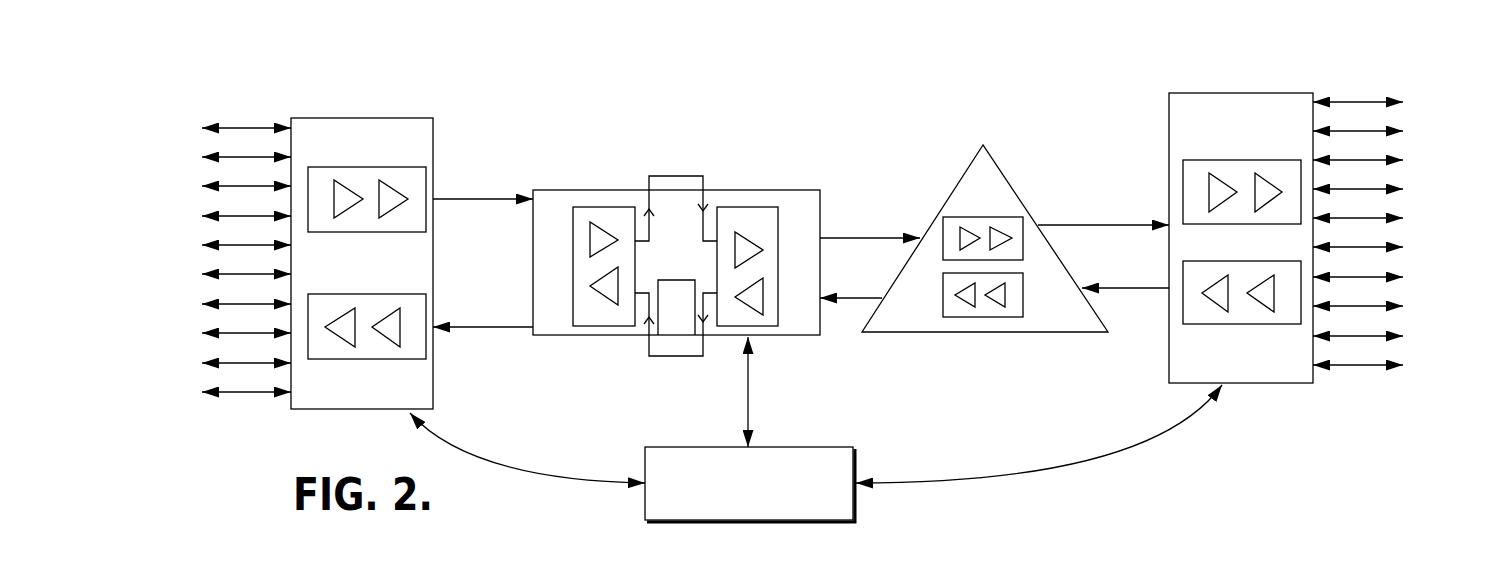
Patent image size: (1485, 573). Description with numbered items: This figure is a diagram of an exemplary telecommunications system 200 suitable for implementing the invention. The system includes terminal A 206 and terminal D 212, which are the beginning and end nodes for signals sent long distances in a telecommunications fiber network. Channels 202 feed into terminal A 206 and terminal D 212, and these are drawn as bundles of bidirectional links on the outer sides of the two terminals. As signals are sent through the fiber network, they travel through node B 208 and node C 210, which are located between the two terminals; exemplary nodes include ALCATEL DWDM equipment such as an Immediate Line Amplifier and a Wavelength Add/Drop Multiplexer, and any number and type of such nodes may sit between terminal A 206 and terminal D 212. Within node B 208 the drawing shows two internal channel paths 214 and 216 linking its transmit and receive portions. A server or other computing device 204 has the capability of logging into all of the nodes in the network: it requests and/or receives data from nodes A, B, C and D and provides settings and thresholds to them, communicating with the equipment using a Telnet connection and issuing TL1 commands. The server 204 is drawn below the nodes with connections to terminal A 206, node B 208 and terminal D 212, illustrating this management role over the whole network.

The network system 200 is at (886, 88).
The channels 202 is at (237, 363).
The server 204 is at (748, 521).
The terminal A 206 is at (321, 411).
The node B 208 is at (597, 336).
The node C 210 is at (910, 333).
The terminal D 212 is at (1197, 384).
The first channel of node B 214 is at (640, 237).
The second channel of node B 216 is at (706, 237).